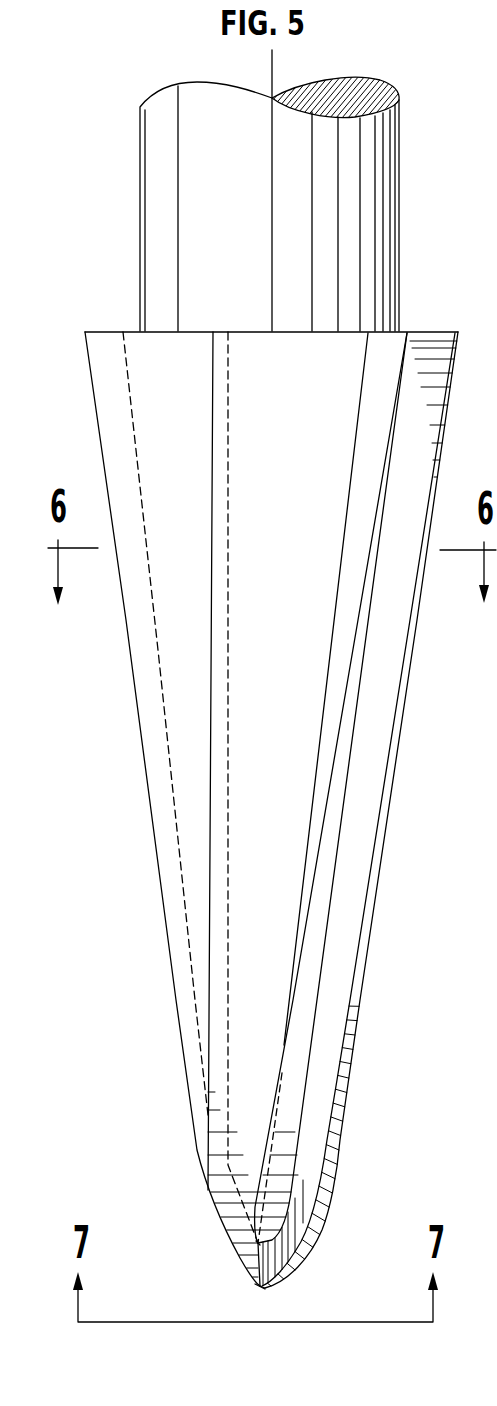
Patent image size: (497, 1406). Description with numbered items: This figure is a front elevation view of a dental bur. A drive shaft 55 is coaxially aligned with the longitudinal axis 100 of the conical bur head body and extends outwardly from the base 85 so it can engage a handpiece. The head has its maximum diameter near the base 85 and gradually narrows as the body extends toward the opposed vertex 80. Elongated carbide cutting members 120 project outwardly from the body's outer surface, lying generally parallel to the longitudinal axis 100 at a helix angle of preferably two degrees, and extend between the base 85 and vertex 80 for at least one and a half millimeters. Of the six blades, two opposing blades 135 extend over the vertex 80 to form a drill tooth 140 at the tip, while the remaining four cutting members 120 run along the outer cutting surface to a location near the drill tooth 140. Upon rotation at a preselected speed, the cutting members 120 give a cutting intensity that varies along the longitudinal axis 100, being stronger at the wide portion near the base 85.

The drive shaft 55 is at (357, 238).
The longitudinal axis 100 is at (272, 69).
The base 85 is at (128, 331).
The cutting members 120 is at (218, 722).
The vertex 80 is at (258, 1245).
The opposing blades 135 is at (227, 1257).
The drill tooth 140 is at (262, 1291).